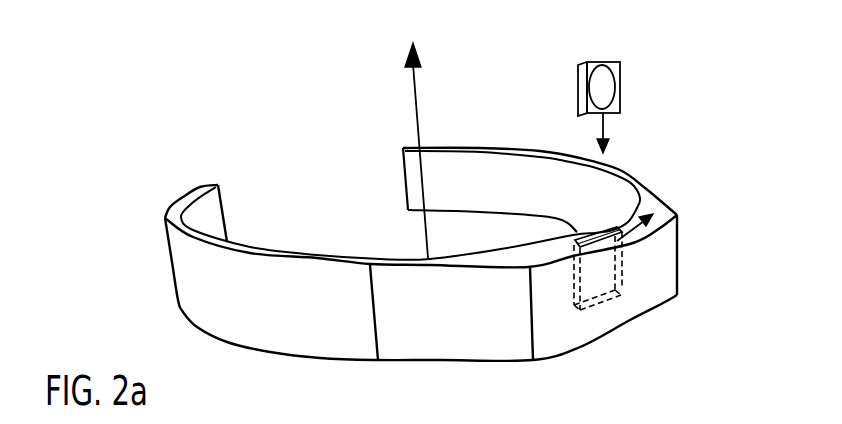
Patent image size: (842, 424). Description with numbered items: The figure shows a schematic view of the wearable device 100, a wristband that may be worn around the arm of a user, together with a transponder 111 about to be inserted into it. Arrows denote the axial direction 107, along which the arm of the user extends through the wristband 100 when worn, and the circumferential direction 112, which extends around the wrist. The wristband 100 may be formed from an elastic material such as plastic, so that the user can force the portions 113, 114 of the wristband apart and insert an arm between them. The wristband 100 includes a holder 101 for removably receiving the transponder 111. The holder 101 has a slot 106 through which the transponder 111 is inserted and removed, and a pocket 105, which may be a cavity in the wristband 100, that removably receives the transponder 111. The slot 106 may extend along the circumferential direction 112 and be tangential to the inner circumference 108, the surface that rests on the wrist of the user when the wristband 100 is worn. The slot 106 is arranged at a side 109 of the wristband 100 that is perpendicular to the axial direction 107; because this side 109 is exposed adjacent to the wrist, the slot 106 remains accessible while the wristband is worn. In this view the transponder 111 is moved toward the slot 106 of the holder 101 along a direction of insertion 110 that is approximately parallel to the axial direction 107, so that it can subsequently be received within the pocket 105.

The wearable device 100 is at (185, 132).
The holder 101 is at (700, 215).
The pocket 105 is at (617, 290).
The slot 106 is at (577, 237).
The axial direction 107 is at (415, 90).
The inner circumference 108 is at (485, 252).
The side 109 is at (660, 207).
The direction of insertion 110 is at (607, 128).
The transponder 111 is at (602, 62).
The circumferential direction 112 is at (636, 237).
The portion of the wristband 113 is at (488, 147).
The portion of the wristband 114 is at (180, 199).